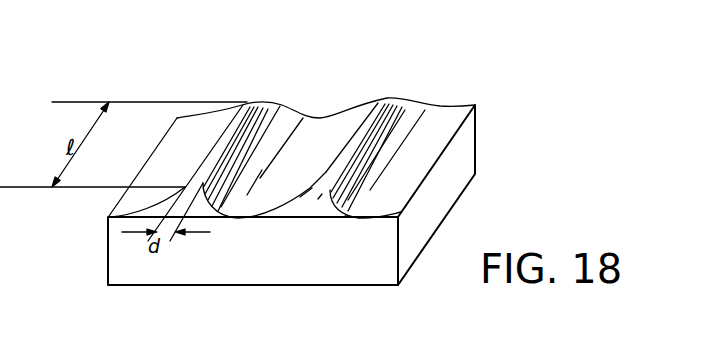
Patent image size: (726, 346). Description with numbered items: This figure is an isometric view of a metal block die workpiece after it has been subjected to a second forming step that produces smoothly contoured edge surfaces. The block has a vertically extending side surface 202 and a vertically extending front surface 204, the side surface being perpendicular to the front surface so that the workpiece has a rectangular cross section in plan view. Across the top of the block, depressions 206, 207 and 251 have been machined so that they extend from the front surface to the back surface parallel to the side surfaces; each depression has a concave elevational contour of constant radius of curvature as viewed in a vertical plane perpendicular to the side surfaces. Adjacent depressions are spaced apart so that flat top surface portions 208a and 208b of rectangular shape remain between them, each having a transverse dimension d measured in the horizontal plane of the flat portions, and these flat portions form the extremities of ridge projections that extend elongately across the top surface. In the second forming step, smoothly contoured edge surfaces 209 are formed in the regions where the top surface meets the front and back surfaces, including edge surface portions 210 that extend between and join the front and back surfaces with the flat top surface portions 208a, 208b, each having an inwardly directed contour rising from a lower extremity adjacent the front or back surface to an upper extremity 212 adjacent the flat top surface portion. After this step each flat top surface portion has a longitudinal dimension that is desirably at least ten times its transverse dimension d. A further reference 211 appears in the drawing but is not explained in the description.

The side surface 202 is at (467, 147).
The front surface 204 is at (323, 268).
The depression 206 is at (450, 119).
The depression 207 is at (174, 141).
The flat top surface portion 208a is at (380, 103).
The flat top surface portion 208b is at (250, 103).
The smoothly contoured edge surface 209 is at (353, 220).
The edge surface portion 210 is at (312, 210).
The front edge 211 is at (297, 218).
The upper extremity 212 is at (320, 197).
The depression 251 is at (319, 117).